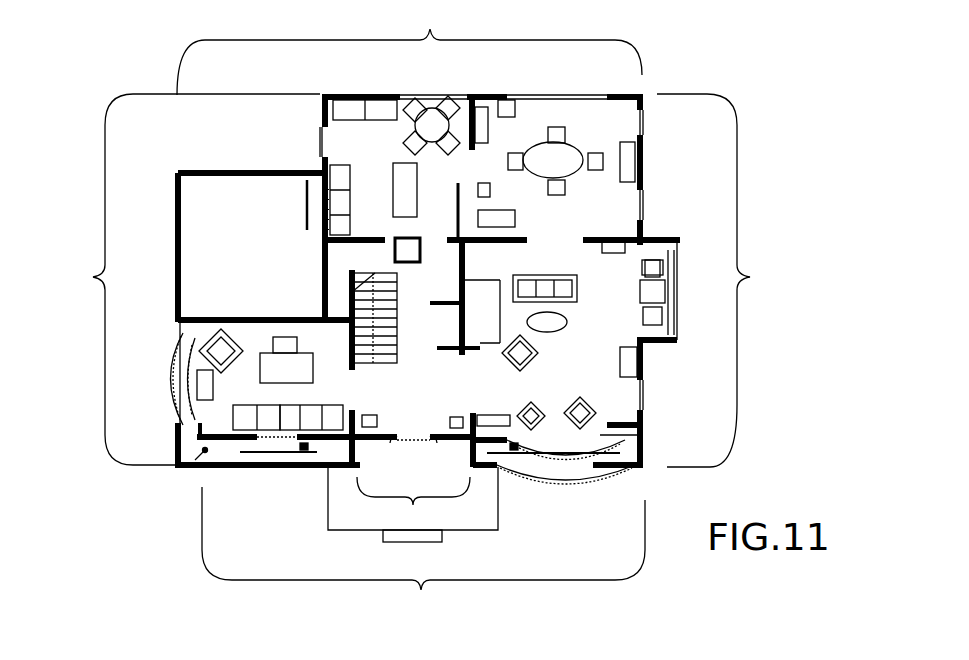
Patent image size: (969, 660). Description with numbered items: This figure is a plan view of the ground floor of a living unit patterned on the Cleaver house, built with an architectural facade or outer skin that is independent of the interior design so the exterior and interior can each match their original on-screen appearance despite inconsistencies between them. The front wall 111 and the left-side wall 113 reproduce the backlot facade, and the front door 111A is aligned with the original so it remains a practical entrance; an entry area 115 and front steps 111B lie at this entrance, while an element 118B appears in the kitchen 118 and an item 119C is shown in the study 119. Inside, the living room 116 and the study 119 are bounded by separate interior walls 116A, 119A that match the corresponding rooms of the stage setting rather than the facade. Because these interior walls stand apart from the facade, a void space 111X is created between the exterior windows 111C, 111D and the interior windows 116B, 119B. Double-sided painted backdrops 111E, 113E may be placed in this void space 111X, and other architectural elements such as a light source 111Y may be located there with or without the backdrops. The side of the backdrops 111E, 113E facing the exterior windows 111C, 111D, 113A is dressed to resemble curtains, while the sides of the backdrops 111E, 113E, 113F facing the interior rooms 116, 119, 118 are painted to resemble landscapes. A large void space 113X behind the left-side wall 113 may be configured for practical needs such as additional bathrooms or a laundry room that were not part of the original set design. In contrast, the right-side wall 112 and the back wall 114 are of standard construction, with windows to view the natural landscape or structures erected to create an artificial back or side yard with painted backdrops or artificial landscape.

The front wall 111 is at (423, 553).
The front door 111A is at (411, 445).
The front steps 111B is at (413, 502).
The exterior window 111C is at (558, 477).
The exterior window 111D is at (278, 470).
The double-sided painted backdrop 111E is at (263, 455).
The void space 111X is at (188, 468).
The light source 111Y is at (304, 450).
The right-side wall 112 is at (731, 280).
The left-side wall 113 is at (176, 279).
The exterior window 113A is at (170, 381).
The double-sided painted backdrop 113E is at (180, 413).
The backdrop 113F is at (306, 206).
The large void space 113X is at (265, 247).
The back wall 114 is at (409, 47).
The entry foyer 115 is at (417, 462).
The living room 116 is at (557, 367).
The interior wall 116A is at (515, 430).
The interior window 116B is at (555, 440).
The kitchen 118 is at (395, 165).
The kitchen appliance 118B is at (334, 209).
The study 119 is at (236, 394).
The interior wall 119A is at (218, 430).
The interior window 119B is at (282, 430).
The side table 119C is at (195, 381).